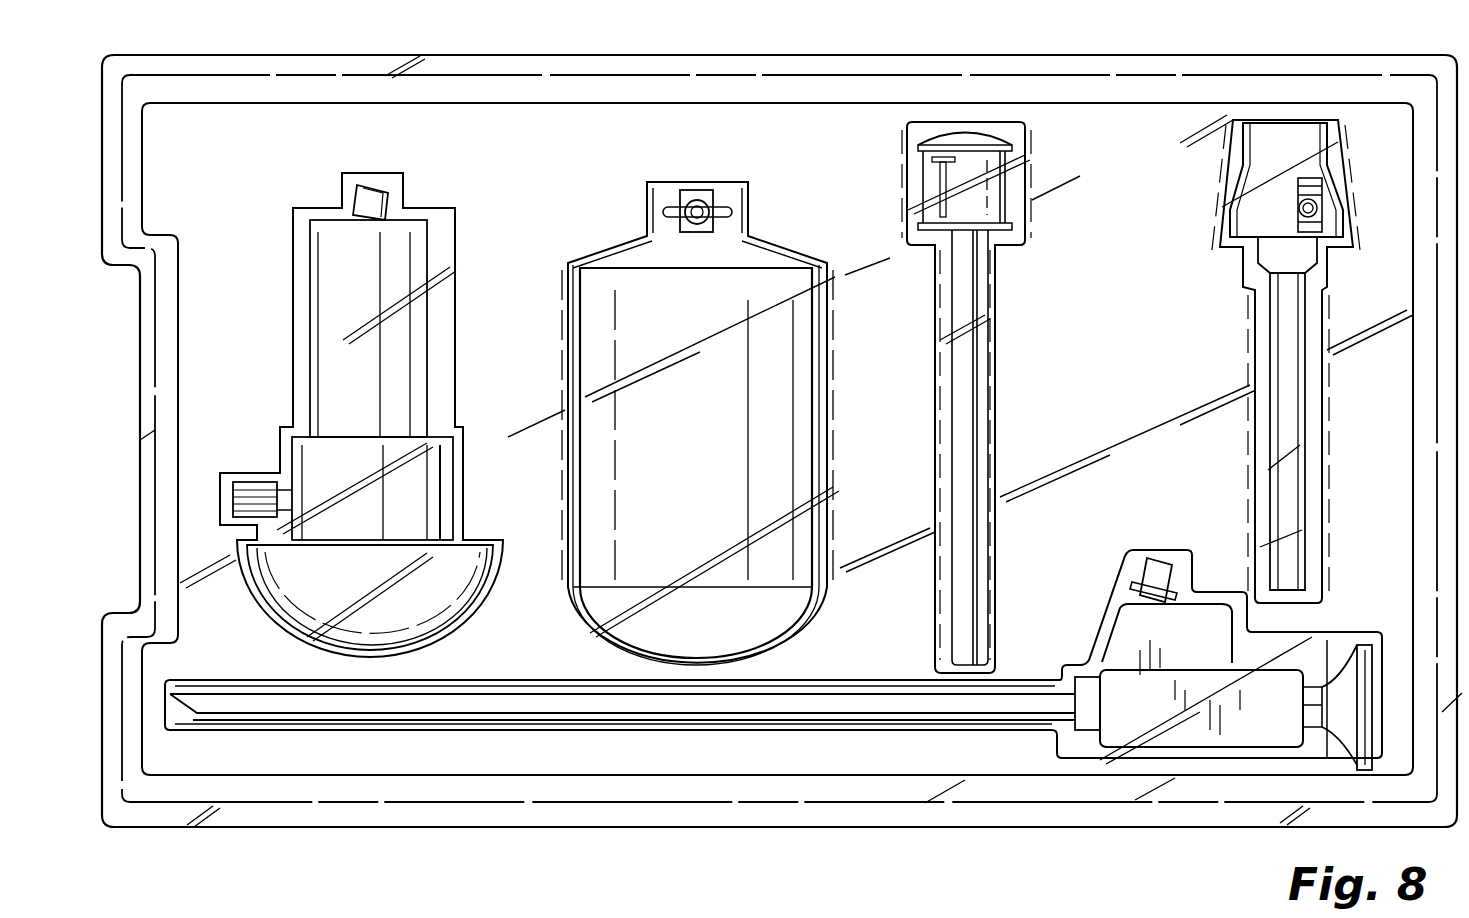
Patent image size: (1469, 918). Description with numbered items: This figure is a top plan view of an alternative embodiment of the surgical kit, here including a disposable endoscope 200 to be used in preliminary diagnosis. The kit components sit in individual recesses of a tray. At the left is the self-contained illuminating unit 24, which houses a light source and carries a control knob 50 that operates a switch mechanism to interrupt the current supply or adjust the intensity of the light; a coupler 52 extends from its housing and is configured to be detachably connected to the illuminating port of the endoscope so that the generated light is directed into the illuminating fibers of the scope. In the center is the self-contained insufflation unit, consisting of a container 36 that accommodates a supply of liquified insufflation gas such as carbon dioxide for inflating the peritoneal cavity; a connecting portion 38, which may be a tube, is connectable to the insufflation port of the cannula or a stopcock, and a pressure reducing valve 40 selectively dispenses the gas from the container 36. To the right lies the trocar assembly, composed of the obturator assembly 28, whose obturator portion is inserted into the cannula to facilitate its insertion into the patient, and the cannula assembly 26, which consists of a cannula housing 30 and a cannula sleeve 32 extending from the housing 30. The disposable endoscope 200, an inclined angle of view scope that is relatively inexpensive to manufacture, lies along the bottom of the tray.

The disposable endoscope 200 is at (980, 746).
The self-contained illuminating unit 24 is at (265, 300).
The control knob 50 is at (248, 487).
The coupler 52 is at (352, 198).
The container 36 is at (623, 347).
The connecting portion 38 is at (688, 190).
The pressure reducing valve 40 is at (727, 204).
The obturator assembly 28 is at (1020, 398).
The cannula assembly 26 is at (1225, 377).
The cannula housing 30 is at (1262, 152).
The cannula sleeve 32 is at (1290, 470).